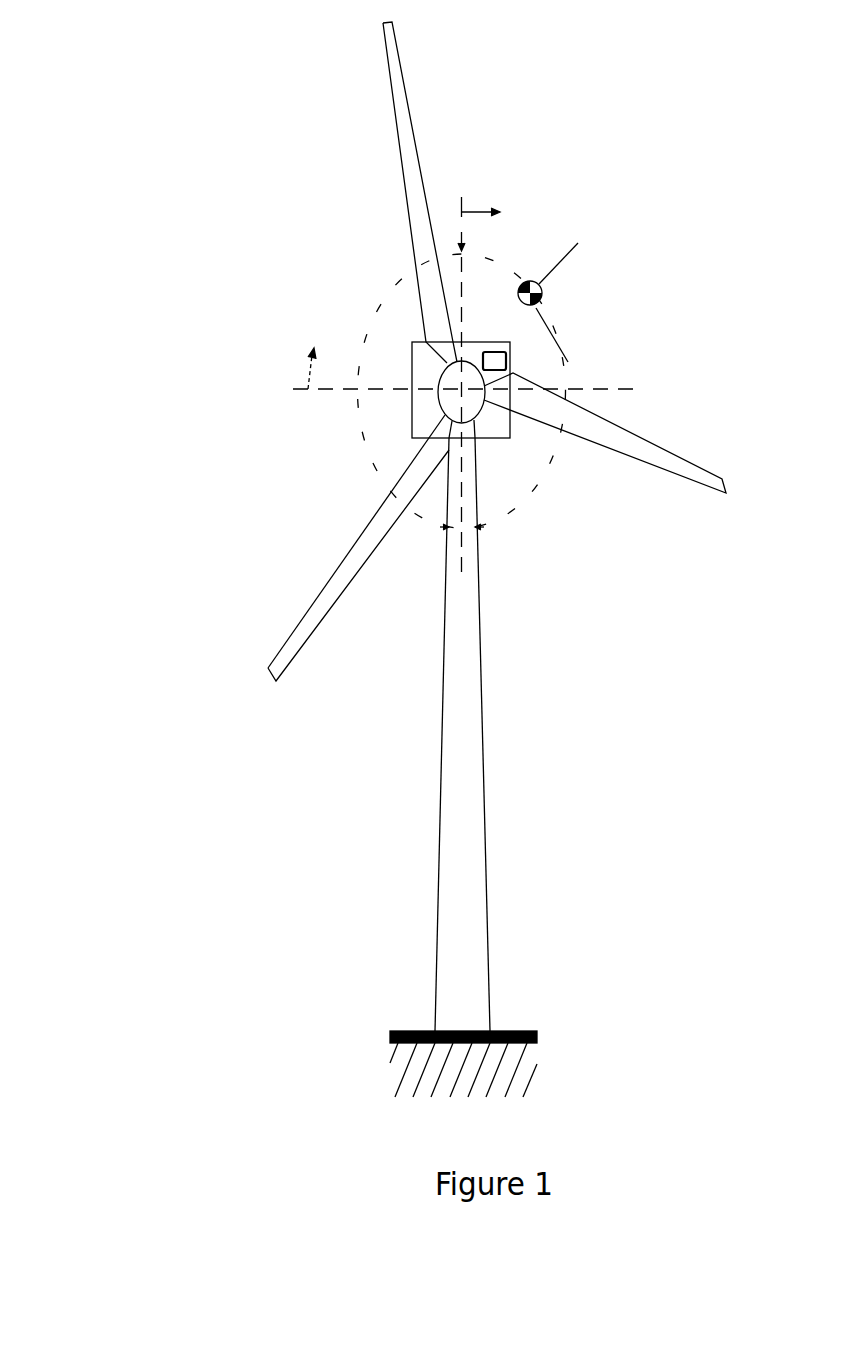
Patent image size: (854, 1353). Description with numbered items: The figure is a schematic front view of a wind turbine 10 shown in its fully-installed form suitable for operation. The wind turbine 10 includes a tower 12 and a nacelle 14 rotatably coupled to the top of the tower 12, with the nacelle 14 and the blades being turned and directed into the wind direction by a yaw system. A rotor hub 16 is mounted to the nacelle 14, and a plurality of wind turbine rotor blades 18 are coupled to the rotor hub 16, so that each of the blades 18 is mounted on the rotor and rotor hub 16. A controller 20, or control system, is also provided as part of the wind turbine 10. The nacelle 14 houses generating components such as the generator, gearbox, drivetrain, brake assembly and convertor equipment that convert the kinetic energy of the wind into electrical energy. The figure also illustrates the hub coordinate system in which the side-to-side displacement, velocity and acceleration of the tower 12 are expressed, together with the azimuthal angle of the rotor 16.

The wind turbine 10 is at (105, 306).
The tower 12 is at (488, 895).
The nacelle 14 is at (412, 417).
The rotor hub 16 is at (482, 440).
The wind turbine rotor blades 18 is at (410, 107).
The controller 20 is at (492, 352).